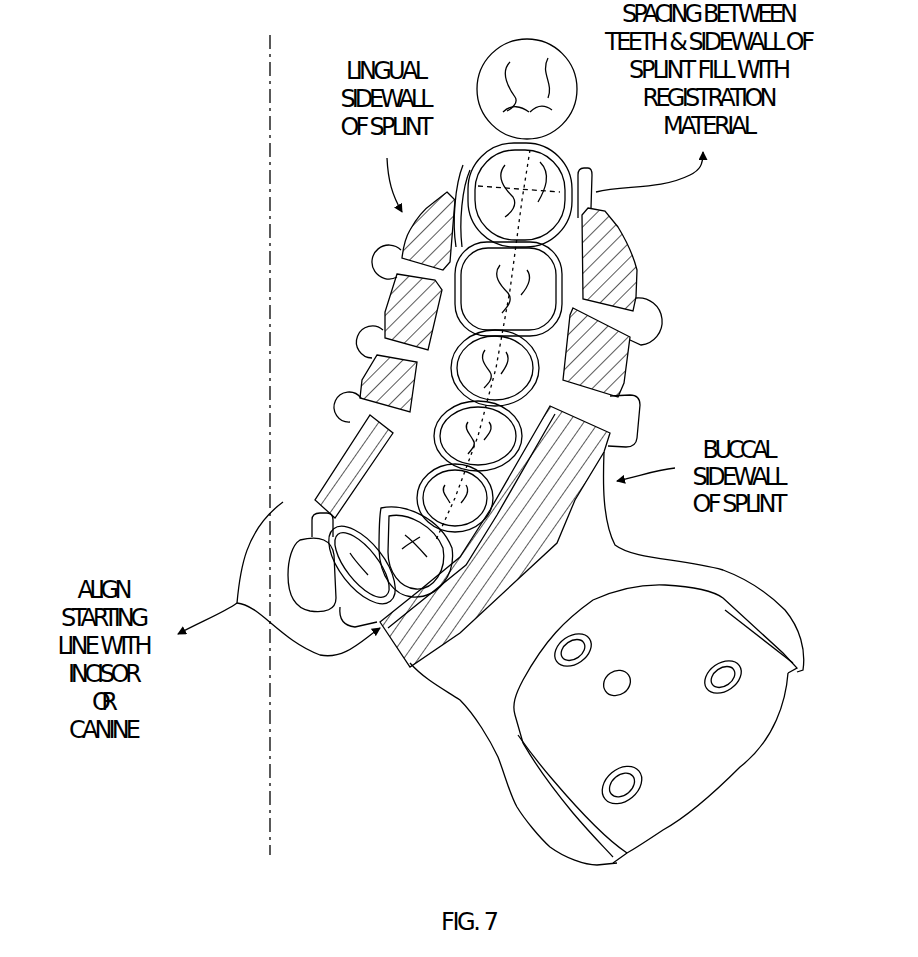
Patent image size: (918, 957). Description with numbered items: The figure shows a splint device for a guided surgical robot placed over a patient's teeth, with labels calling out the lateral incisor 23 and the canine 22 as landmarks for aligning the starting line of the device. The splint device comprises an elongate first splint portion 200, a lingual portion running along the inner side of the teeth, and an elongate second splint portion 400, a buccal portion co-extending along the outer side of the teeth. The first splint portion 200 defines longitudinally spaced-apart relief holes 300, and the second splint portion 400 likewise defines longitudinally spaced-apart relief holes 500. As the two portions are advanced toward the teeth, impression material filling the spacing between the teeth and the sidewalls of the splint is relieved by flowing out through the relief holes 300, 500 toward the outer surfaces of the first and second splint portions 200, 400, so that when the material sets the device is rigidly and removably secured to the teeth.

The first splint portion 200 is at (342, 442).
The relief holes 300 is at (398, 240).
The second splint portion 400 is at (606, 246).
The relief holes 500 is at (639, 285).
The lateral incisor 23 is at (325, 513).
The canine 22 is at (437, 563).